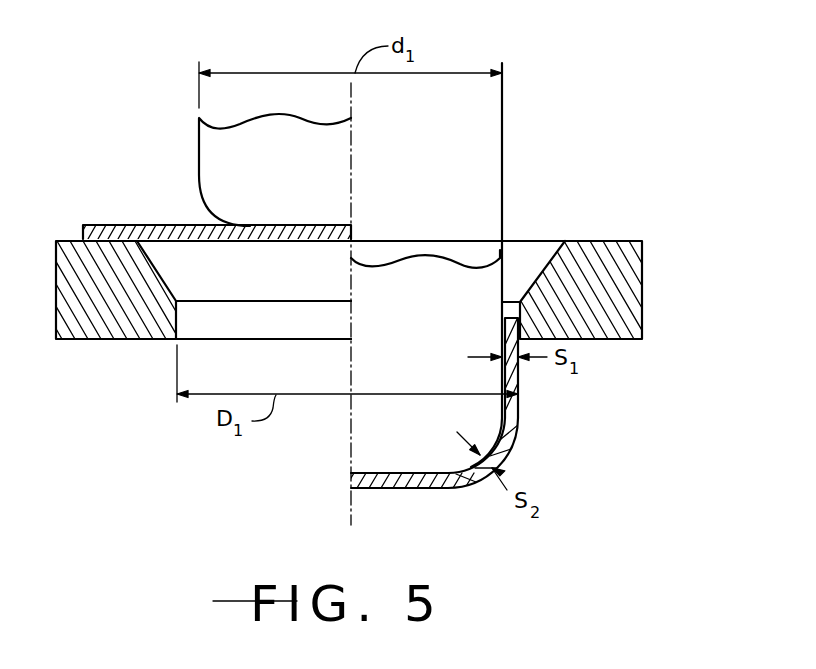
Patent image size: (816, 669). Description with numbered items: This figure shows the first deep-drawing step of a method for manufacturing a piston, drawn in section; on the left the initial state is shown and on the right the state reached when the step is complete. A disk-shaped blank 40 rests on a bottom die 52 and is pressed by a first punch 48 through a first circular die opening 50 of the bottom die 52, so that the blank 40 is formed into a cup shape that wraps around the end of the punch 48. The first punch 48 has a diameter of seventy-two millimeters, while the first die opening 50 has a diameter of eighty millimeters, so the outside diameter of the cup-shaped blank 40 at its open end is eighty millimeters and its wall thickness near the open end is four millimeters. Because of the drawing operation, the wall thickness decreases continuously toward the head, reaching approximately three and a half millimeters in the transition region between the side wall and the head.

The disk-shaped blank 40 is at (152, 225).
The first punch 48 is at (492, 286).
The first circular die opening 50 is at (233, 352).
The bottom die 52 is at (642, 305).